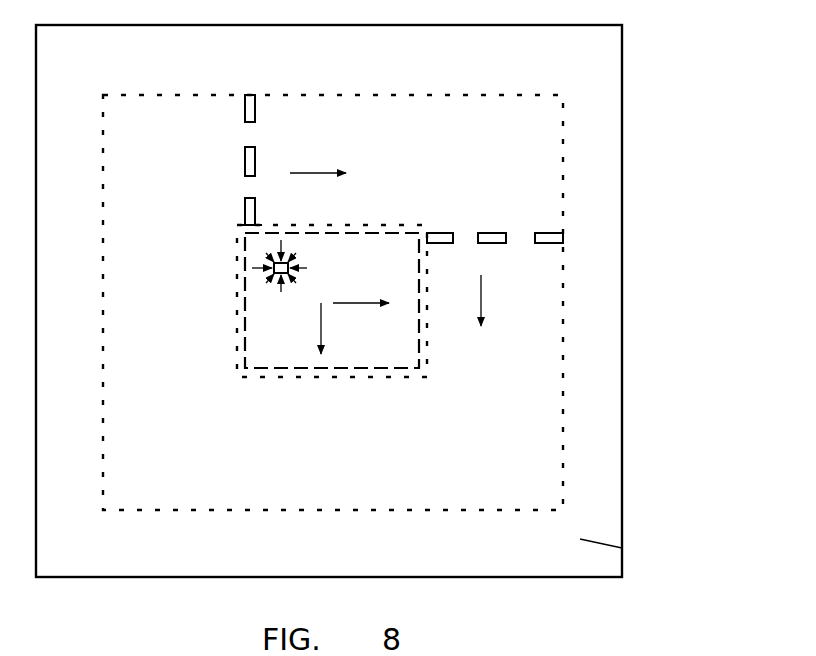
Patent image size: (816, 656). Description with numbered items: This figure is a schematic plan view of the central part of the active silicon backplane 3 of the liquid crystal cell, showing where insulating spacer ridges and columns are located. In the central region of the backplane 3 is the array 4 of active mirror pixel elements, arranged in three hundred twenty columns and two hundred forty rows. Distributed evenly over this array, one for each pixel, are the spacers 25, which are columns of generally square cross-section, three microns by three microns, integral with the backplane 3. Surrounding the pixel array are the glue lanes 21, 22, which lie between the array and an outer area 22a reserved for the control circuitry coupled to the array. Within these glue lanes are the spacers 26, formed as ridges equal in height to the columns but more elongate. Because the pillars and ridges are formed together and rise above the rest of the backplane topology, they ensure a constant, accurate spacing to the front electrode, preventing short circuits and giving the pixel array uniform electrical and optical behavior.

The active silicon backplane 3 is at (634, 296).
The array of active mirror pixel elements 4 is at (392, 274).
The glue lane 21 is at (177, 393).
The glue lane 22 is at (436, 178).
The outer area for the control circuitry 22a is at (580, 539).
The spacers 25 is at (268, 272).
The spacers 26 is at (253, 157).